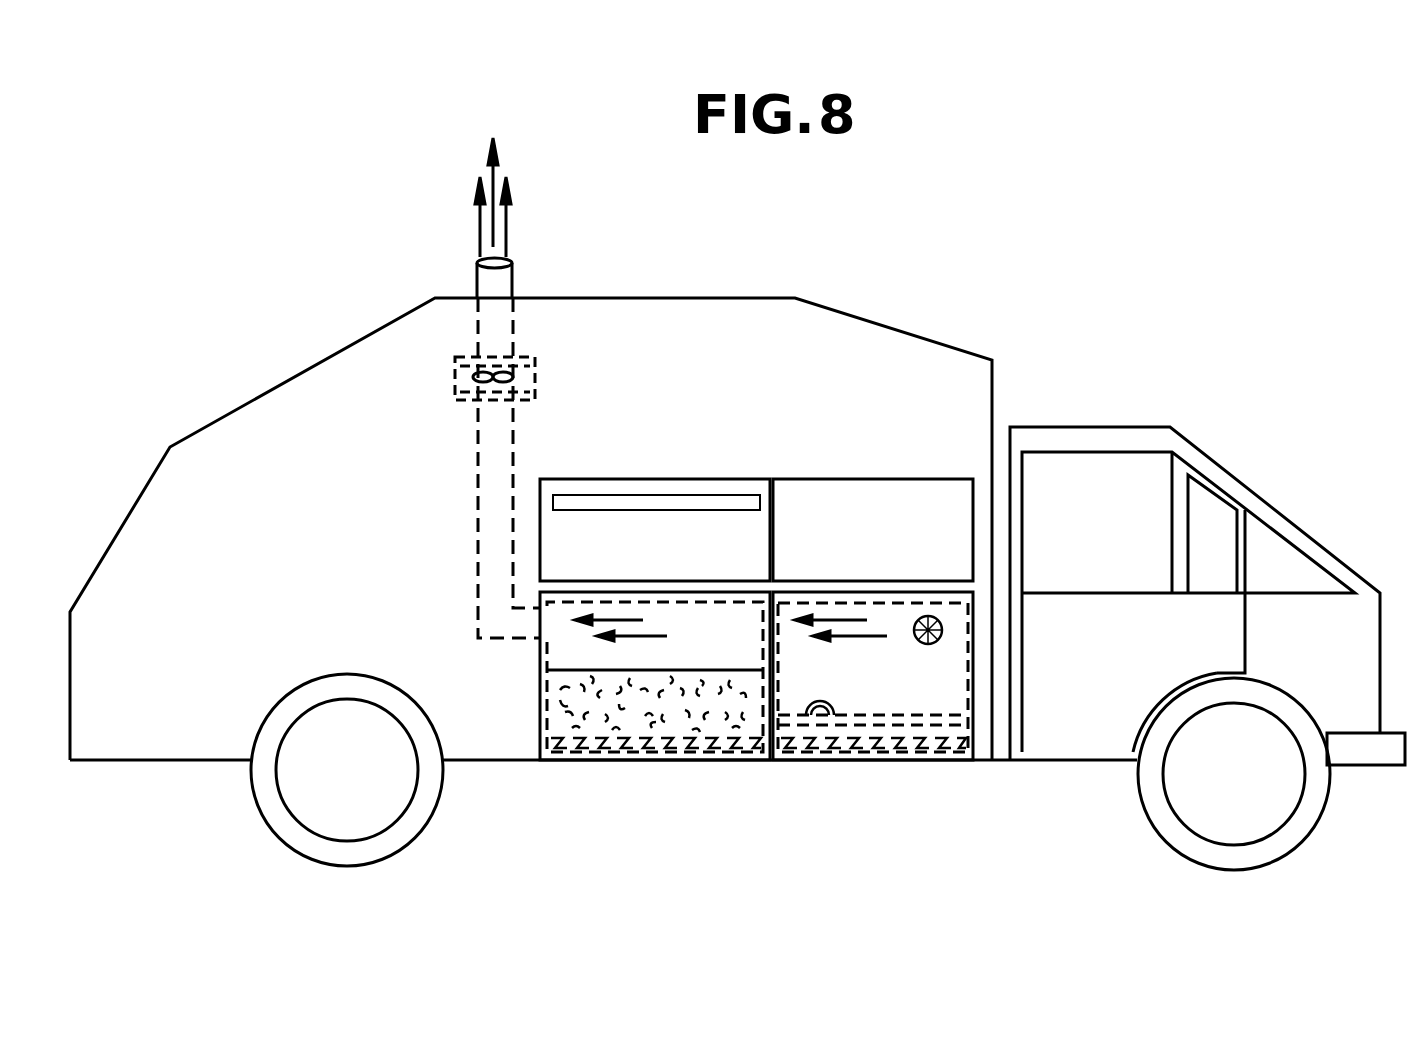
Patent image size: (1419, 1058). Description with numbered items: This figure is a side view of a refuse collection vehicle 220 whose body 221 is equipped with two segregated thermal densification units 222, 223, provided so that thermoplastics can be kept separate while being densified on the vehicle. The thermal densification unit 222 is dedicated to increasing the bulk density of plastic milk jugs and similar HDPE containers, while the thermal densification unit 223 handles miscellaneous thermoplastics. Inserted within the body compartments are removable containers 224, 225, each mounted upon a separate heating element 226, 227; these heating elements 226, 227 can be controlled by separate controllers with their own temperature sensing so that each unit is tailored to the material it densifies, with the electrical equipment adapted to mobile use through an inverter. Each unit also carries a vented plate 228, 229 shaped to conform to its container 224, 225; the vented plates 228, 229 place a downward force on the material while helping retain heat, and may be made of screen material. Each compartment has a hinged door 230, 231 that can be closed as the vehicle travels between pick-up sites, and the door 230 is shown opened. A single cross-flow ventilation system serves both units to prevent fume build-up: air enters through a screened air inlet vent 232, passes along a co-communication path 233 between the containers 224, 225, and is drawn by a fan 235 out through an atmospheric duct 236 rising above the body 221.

The refuse collection vehicle 220 is at (902, 298).
The body 221 is at (288, 395).
The thermal densification unit 222 is at (540, 668).
The thermal densification unit 223 is at (976, 704).
The removable container 224 is at (547, 690).
The removable container 225 is at (970, 633).
The heating element 226 is at (667, 752).
The heating element 227 is at (887, 752).
The vented plate 228 is at (676, 668).
The vented plate 229 is at (862, 712).
The hinged door 230 is at (625, 502).
The hinged door 231 is at (900, 495).
The screened air inlet vent 232 is at (917, 642).
The co-communication path 233 is at (775, 640).
The fan 235 is at (467, 373).
The atmospheric duct 236 is at (507, 263).